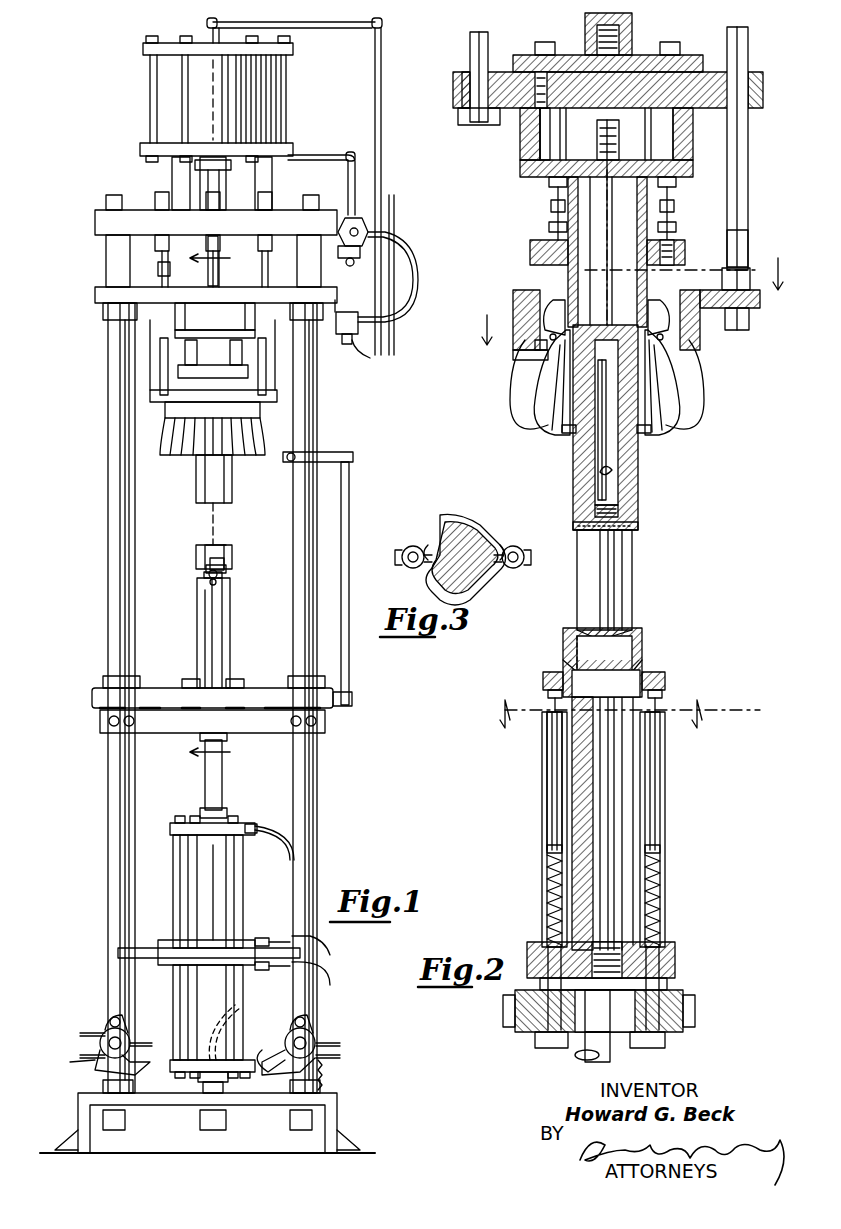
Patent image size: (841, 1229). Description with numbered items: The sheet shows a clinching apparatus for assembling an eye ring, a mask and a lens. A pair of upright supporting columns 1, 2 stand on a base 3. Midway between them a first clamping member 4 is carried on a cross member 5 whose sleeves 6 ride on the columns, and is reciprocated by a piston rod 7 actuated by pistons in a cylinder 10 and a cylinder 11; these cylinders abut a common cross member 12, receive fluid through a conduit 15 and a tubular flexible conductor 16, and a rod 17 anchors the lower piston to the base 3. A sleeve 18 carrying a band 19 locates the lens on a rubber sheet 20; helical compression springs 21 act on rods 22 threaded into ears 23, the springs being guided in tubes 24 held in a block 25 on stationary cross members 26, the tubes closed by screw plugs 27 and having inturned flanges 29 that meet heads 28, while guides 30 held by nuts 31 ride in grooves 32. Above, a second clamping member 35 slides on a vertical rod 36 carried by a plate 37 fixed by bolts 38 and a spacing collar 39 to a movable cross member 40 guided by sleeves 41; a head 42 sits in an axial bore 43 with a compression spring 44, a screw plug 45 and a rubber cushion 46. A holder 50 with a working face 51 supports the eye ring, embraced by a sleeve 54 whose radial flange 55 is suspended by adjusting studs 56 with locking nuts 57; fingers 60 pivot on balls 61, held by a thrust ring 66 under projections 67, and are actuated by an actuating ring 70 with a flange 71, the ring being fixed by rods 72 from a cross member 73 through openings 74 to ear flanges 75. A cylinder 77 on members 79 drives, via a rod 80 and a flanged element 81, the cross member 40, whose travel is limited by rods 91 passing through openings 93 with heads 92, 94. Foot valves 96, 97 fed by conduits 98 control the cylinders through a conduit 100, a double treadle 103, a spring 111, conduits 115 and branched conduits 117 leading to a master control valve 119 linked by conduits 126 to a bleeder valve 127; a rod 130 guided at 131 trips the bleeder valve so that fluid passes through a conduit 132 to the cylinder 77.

In FIG. 1, the supporting column 1 is at (108, 517).
In FIG. 2, the supporting column 1 is at (632, 582).
In FIG. 1, the supporting column 2 is at (328, 430).
In FIG. 1, the base 3 is at (152, 1108).
In FIG. 2, the base 3 is at (598, 740).
In FIG. 1, the first clamping member 4 is at (232, 632).
In FIG. 2, the first clamping member 4 is at (582, 812).
In FIG. 3, the first clamping member 4 is at (443, 522).
In FIG. 1, the cross member 5 is at (92, 700).
In FIG. 2, the cross member 5 is at (676, 960).
In FIG. 1, the sleeves 6 is at (103, 680).
In FIG. 1, the piston rod 7 is at (222, 785).
In FIG. 2, the piston rod 7 is at (585, 1060).
In FIG. 1, the cylinder 10 is at (203, 862).
In FIG. 1, the cylinder 11 is at (205, 987).
In FIG. 1, the cross member 12 is at (140, 948).
In FIG. 1, the conduit 15 is at (258, 938).
In FIG. 1, the tubular flexible conductor 16 is at (262, 968).
In FIG. 1, the rod 17 is at (210, 1118).
In FIG. 1, the sleeve 18 is at (196, 557).
In FIG. 2, the sleeve 18 is at (642, 655).
In FIG. 3, the sleeve 18 is at (472, 518).
In FIG. 1, the band 19 is at (224, 565).
In FIG. 2, the band 19 is at (642, 635).
In FIG. 1, the sheet of rubber 20 is at (210, 545).
In FIG. 2, the sheet of rubber 20 is at (630, 628).
In FIG. 2, the helical compression springs 21 is at (547, 895).
In FIG. 1, the rods 22 is at (218, 585).
In FIG. 2, the rods 22 is at (552, 775).
In FIG. 3, the rods 22 is at (405, 548).
In FIG. 1, the ears 23 is at (226, 568).
In FIG. 2, the ears 23 is at (545, 672).
In FIG. 1, the tubes 24 is at (205, 624).
In FIG. 2, the tubes 24 is at (548, 922).
In FIG. 2, the block 25 is at (683, 995).
In FIG. 1, the stationary cross members 26 is at (160, 733).
In FIG. 2, the stationary cross members 26 is at (518, 1032).
In FIG. 2, the screw plugs 27 is at (550, 1048).
In FIG. 2, the heads 28 is at (547, 849).
In FIG. 2, the inturned flanges 29 is at (518, 702).
In FIG. 1, the guides 30 is at (204, 576).
In FIG. 2, the guides 30 is at (555, 690).
In FIG. 3, the guides 30 is at (424, 568).
In FIG. 1, the nuts 31 is at (218, 575).
In FIG. 2, the nuts 31 is at (552, 698).
In FIG. 3, the nuts 31 is at (400, 566).
In FIG. 2, the grooves 32 is at (575, 790).
In FIG. 3, the grooves 32 is at (428, 545).
In FIG. 1, the second clamping member 35 is at (196, 490).
In FIG. 2, the second clamping member 35 is at (573, 490).
In FIG. 2, the vertical rod 36 is at (568, 285).
In FIG. 1, the plate 37 is at (175, 334).
In FIG. 2, the plate 37 is at (520, 170).
In FIG. 2, the bolts 38 is at (520, 145).
In FIG. 2, the spacing collar 39 is at (520, 128).
In FIG. 1, the movable cross member 40 is at (96, 295).
In FIG. 2, the movable cross member 40 is at (763, 92).
In FIG. 1, the sleeves 41 is at (103, 310).
In FIG. 2, the head 42 is at (608, 430).
In FIG. 2, the axial bore 43 is at (616, 470).
In FIG. 2, the compression spring 44 is at (620, 262).
In FIG. 2, the screw plug 45 is at (618, 510).
In FIG. 2, the rubber cushion 46 is at (638, 535).
In FIG. 2, the holder 50 is at (660, 378).
In FIG. 2, the working face 51 is at (645, 433).
In FIG. 2, the sleeve 54 is at (674, 255).
In FIG. 1, the radial flange 55 is at (178, 372).
In FIG. 2, the radial flange 55 is at (530, 255).
In FIG. 2, the adjusting studs 56 is at (551, 207).
In FIG. 2, the locking nuts 57 is at (549, 190).
In FIG. 1, the fingers 60 is at (175, 452).
In FIG. 2, the fingers 60 is at (512, 420).
In FIG. 2, the balls 61 is at (548, 330).
In FIG. 2, the thrust ring 66 is at (695, 335).
In FIG. 2, the projections 67 is at (720, 320).
In FIG. 1, the actuating ring 70 is at (170, 420).
In FIG. 2, the actuating ring 70 is at (513, 355).
In FIG. 2, the flange 71 is at (537, 352).
In FIG. 1, the rods 72 is at (160, 358).
In FIG. 2, the rods 72 is at (748, 172).
In FIG. 1, the cross member 73 is at (100, 222).
In FIG. 2, the openings 74 is at (735, 75).
In FIG. 1, the ear flanges 75 is at (150, 396).
In FIG. 2, the ear flanges 75 is at (755, 300).
In FIG. 1, the cylinder 77 is at (130, 98).
In FIG. 1, the members 79 is at (172, 166).
In FIG. 1, the rod 80 is at (208, 170).
In FIG. 2, the rod 80 is at (585, 38).
In FIG. 2, the flanged element 81 is at (670, 58).
In FIG. 1, the rods 91 is at (210, 250).
In FIG. 2, the rods 91 is at (470, 42).
In FIG. 1, the heads 92 is at (158, 268).
In FIG. 2, the openings 93 is at (478, 63).
In FIG. 1, the heads 94 is at (215, 310).
In FIG. 2, the heads 94 is at (462, 125).
In FIG. 1, the foot valve 96 is at (105, 1028).
In FIG. 1, the foot valve 97 is at (310, 1030).
In FIG. 1, the conduits 98 is at (145, 1043).
In FIG. 1, the conduit 100 is at (270, 815).
In FIG. 1, the double treadle 103 is at (95, 1068).
In FIG. 1, the spring 111 is at (325, 1085).
In FIG. 1, the conduits 115 is at (318, 26).
In FIG. 1, the branched conduits 117 is at (388, 345).
In FIG. 1, the master control valve 119 is at (362, 225).
In FIG. 1, the conduits 126 is at (418, 280).
In FIG. 1, the bleeder valve 127 is at (372, 362).
In FIG. 1, the rod 130 is at (350, 500).
In FIG. 1, the guide 131 is at (335, 455).
In FIG. 1, the conduit 132 is at (314, 157).